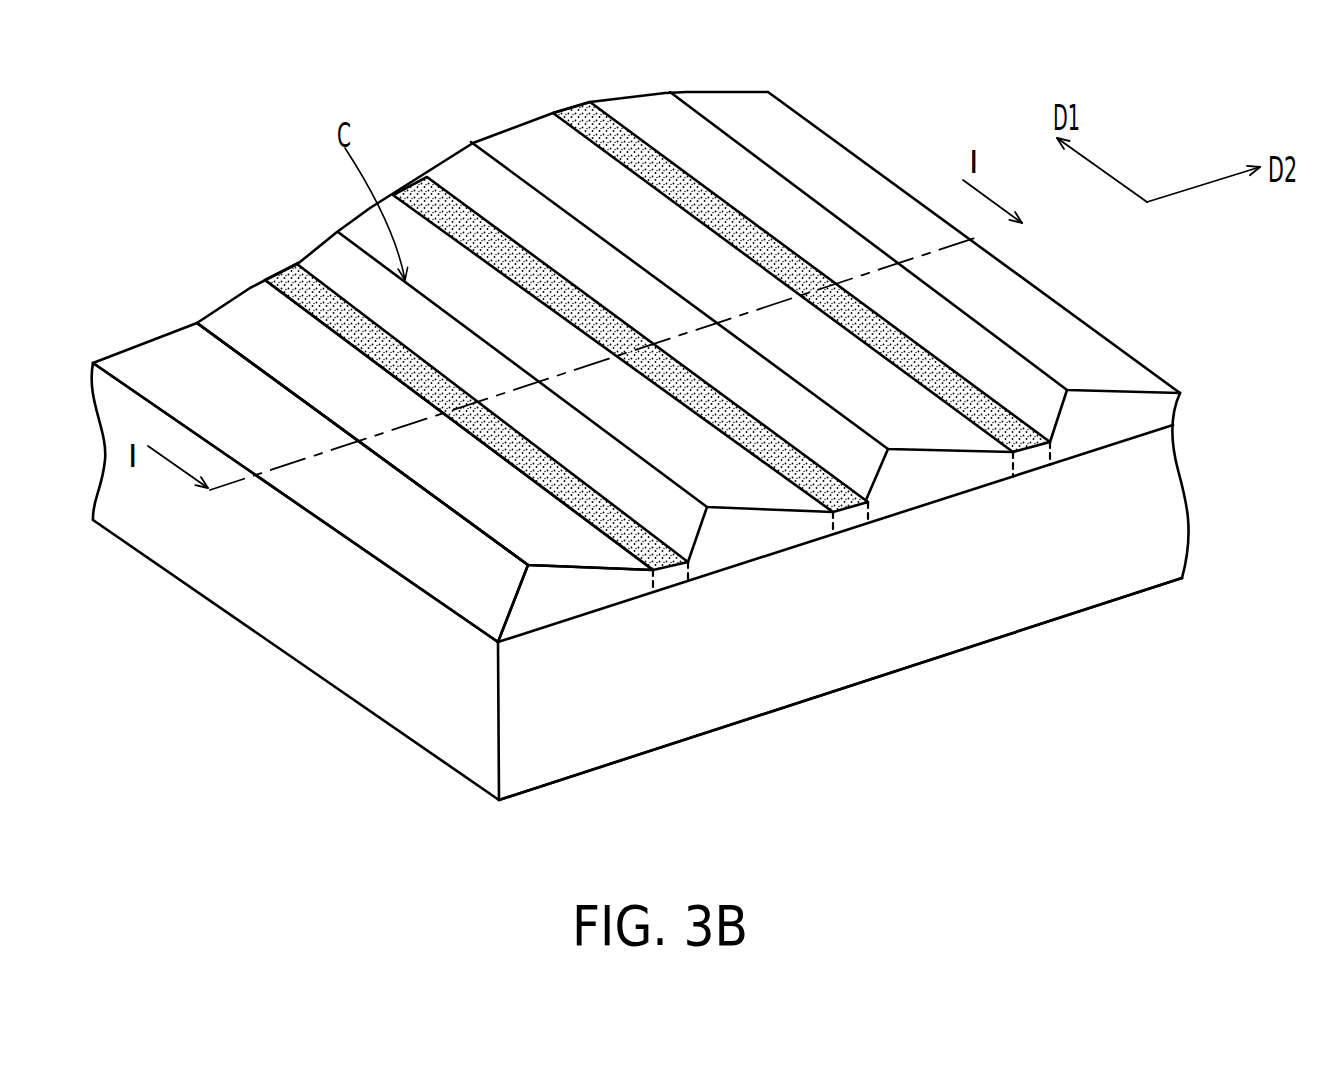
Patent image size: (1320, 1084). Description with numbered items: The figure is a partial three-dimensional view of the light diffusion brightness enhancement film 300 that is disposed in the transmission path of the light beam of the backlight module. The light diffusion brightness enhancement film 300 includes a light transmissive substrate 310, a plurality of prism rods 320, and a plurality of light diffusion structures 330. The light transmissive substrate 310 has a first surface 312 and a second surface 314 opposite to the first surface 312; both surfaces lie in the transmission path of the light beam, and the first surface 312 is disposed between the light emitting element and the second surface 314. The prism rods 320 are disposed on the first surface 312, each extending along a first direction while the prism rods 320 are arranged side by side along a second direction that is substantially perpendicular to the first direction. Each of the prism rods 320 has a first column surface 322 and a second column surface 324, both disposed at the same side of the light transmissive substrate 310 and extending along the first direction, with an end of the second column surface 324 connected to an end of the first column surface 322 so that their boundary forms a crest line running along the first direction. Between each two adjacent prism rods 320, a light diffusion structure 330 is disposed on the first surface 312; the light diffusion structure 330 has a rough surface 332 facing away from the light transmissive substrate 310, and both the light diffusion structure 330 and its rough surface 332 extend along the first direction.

The light diffusion brightness enhancement film 300 is at (1304, 803).
The light transmissive substrate 310 is at (1157, 510).
The first surface 312 is at (561, 609).
The second surface 314 is at (897, 670).
The prism rods 320 is at (1113, 397).
The first column surface 322 is at (195, 392).
The second column surface 324 is at (267, 337).
The light diffusion structure 330 is at (1037, 458).
The rough surface 332 is at (332, 318).